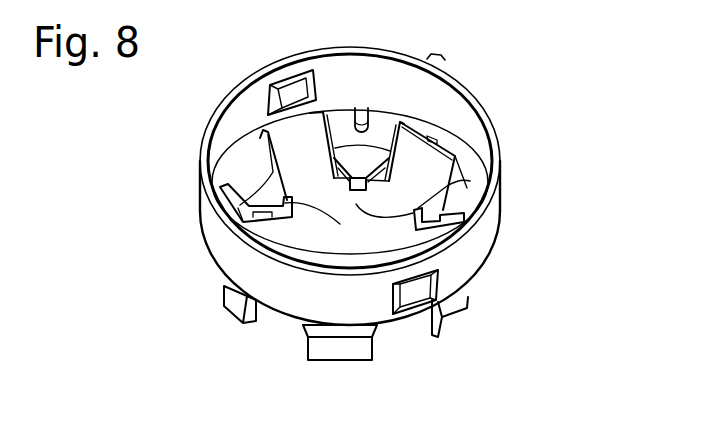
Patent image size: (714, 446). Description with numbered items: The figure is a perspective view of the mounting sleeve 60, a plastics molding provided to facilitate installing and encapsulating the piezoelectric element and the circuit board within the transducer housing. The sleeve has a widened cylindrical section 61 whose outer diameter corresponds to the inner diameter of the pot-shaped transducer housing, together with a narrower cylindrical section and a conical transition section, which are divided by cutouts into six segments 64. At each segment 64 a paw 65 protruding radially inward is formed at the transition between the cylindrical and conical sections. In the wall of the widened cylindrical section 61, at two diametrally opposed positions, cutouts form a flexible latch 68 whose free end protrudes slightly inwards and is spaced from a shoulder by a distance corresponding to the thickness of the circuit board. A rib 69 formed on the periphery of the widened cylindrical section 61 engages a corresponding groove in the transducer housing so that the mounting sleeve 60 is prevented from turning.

The mounting sleeve 60 is at (500, 131).
The widened cylindrical section 61 is at (472, 253).
The segments 64 is at (378, 130).
The paw 65 is at (358, 190).
The flexible latch 68 is at (290, 90).
The rib 69 is at (439, 61).